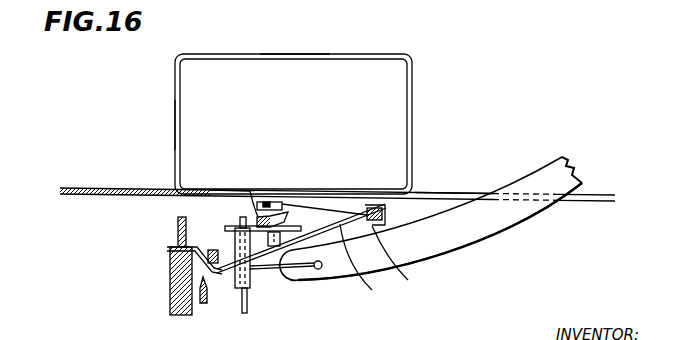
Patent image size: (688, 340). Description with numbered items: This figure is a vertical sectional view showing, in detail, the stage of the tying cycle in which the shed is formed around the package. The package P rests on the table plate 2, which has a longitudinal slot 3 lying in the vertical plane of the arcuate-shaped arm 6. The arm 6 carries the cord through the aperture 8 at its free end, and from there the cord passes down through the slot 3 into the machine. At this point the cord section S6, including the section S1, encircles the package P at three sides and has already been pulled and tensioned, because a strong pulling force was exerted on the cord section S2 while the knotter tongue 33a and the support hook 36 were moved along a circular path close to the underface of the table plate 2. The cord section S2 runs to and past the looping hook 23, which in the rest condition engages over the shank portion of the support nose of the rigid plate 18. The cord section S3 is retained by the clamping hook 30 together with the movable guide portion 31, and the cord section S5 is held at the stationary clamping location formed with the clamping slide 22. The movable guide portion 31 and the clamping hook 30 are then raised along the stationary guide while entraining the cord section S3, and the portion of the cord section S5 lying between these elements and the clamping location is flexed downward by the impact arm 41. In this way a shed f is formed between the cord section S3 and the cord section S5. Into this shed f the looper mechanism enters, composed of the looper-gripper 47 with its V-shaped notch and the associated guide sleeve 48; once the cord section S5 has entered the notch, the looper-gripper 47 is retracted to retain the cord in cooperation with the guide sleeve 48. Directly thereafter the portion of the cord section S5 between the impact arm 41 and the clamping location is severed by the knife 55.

The table plate 2 is at (103, 189).
The longitudinal slot 3 is at (449, 193).
The arcuate-shaped arm 6 is at (540, 181).
The aperture 8 is at (322, 268).
The rigid plate 18 is at (256, 214).
The clamping slide 22 is at (177, 228).
The looping hook 23 is at (266, 201).
The clamping hook 30 is at (242, 295).
The movable guide portion 31 is at (231, 238).
The knotter tongue 33a is at (368, 204).
The support hook 36 is at (389, 203).
The impact arm 41 is at (193, 253).
The looper-gripper 47 is at (284, 233).
The guide sleeve 48 is at (273, 248).
The knife 55 is at (200, 292).
The shed f is at (311, 269).
The package P is at (392, 93).
The cord section S1 is at (177, 123).
The cord section S2 is at (313, 207).
The cord section S3 is at (364, 266).
The cord section S5 is at (398, 262).
The cord section S6 is at (295, 47).